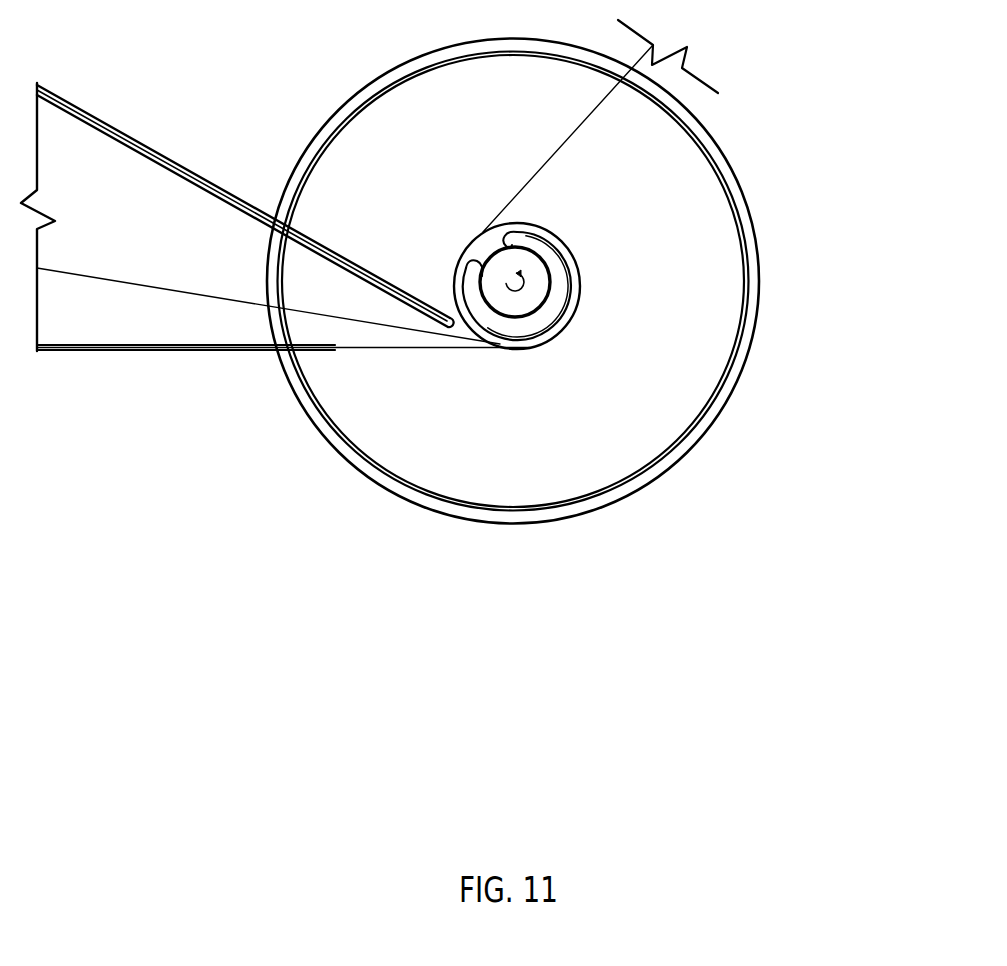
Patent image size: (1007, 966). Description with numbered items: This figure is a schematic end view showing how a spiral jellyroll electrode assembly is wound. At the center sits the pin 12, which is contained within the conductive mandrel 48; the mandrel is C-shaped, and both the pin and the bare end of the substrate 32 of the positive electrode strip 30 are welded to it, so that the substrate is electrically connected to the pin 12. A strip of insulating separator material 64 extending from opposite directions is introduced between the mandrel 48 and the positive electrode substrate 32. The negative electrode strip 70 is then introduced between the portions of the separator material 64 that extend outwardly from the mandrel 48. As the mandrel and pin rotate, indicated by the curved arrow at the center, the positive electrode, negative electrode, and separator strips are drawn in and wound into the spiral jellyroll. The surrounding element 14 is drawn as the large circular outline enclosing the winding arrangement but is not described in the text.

The pin 12 is at (548, 269).
The drum 14 is at (760, 313).
The positive electrode strip 30 is at (120, 350).
The substrate 32 is at (420, 347).
The conductive mandrel 48 is at (555, 304).
The insulating separator material 64 is at (133, 287).
The negative electrode strip 70 is at (88, 117).